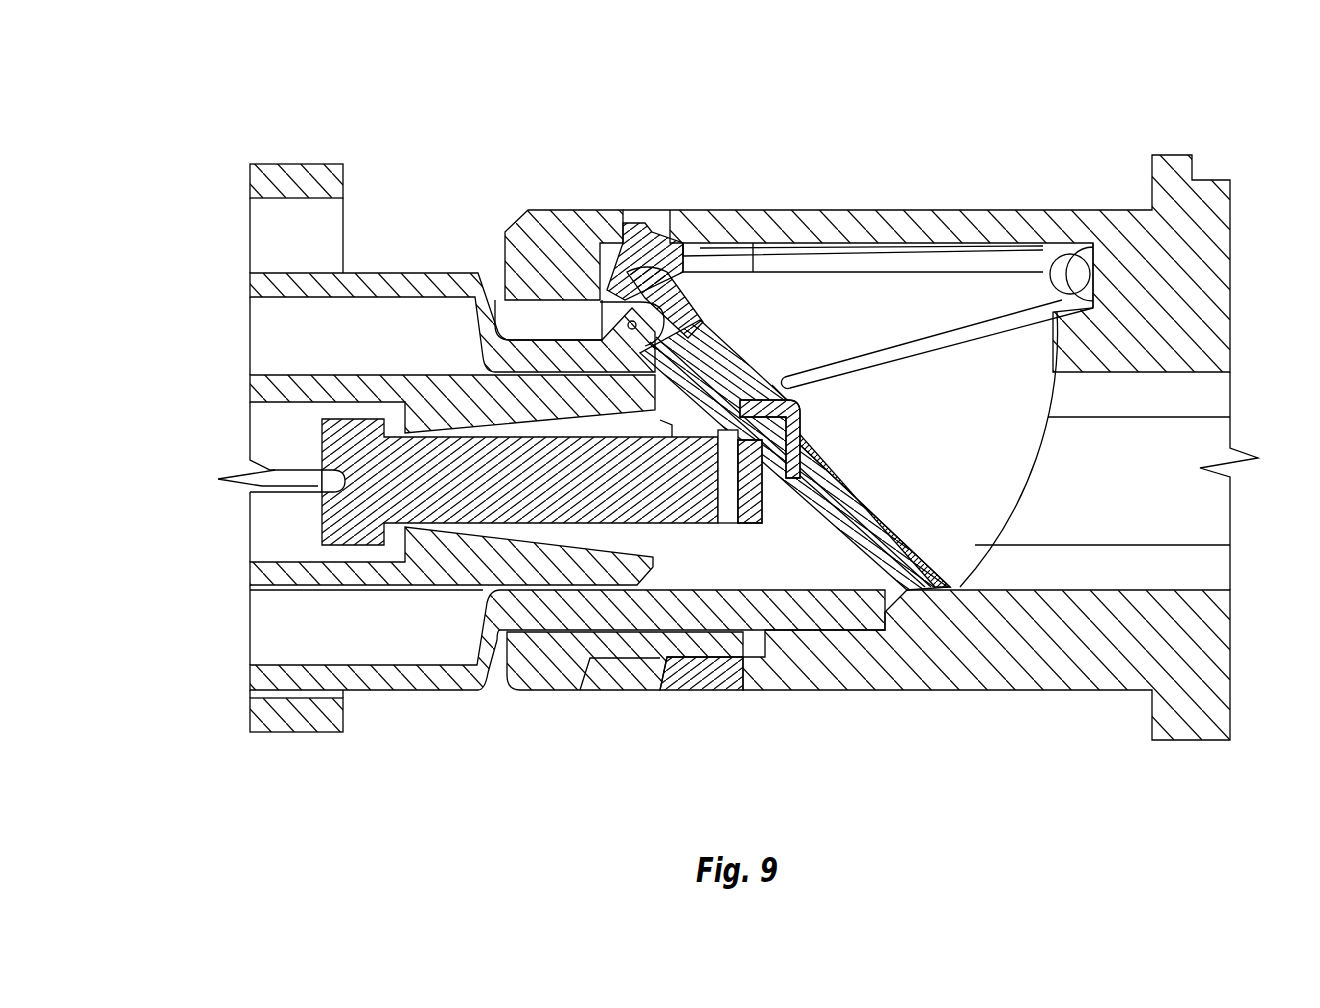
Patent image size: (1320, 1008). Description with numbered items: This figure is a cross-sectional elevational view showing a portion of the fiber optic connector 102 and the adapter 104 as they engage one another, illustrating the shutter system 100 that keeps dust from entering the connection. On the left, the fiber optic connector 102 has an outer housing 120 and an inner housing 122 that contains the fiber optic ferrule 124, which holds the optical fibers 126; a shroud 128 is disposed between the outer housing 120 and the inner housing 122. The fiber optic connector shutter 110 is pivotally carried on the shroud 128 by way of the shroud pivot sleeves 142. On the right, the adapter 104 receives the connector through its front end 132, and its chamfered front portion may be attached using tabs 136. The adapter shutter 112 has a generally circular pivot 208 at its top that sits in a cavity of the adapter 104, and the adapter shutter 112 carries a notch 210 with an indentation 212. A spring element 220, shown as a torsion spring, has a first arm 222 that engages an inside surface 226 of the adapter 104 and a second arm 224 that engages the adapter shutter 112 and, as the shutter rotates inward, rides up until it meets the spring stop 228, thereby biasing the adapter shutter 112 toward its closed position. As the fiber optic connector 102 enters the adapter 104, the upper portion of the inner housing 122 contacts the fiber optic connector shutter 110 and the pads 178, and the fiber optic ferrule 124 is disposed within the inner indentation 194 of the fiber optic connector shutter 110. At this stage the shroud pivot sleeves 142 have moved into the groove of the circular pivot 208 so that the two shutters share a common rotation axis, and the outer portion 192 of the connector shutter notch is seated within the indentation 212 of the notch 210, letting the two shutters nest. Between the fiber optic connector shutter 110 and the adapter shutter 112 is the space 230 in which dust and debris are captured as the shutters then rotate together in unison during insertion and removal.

The shutter system 100 is at (878, 100).
The fiber optic connector 102 is at (418, 200).
The adapter 104 is at (1268, 200).
The fiber optic connector shutter 110 is at (887, 610).
The adapter shutter 112 is at (868, 495).
The outer housing 120 is at (300, 162).
The inner housing 122 is at (250, 390).
The fiber optic ferrule 124 is at (322, 518).
The optical fibers 126 is at (270, 472).
The shroud 128 is at (250, 287).
The front end 132 is at (512, 212).
The tabs 136 is at (628, 222).
The shroud pivot sleeves 142 is at (600, 318).
The pads 178 is at (672, 425).
The outer portion 192 is at (780, 445).
The inner indentation 194 is at (755, 460).
The generally circular pivot 208 is at (690, 275).
The notch 210 is at (815, 402).
The indentation 212 is at (772, 385).
The spring element 220 is at (1070, 245).
The first arm 222 is at (1028, 240).
The second arm 224 is at (988, 320).
The inside surface 226 is at (720, 255).
The spring stop 228 is at (752, 345).
The space 230 is at (895, 545).